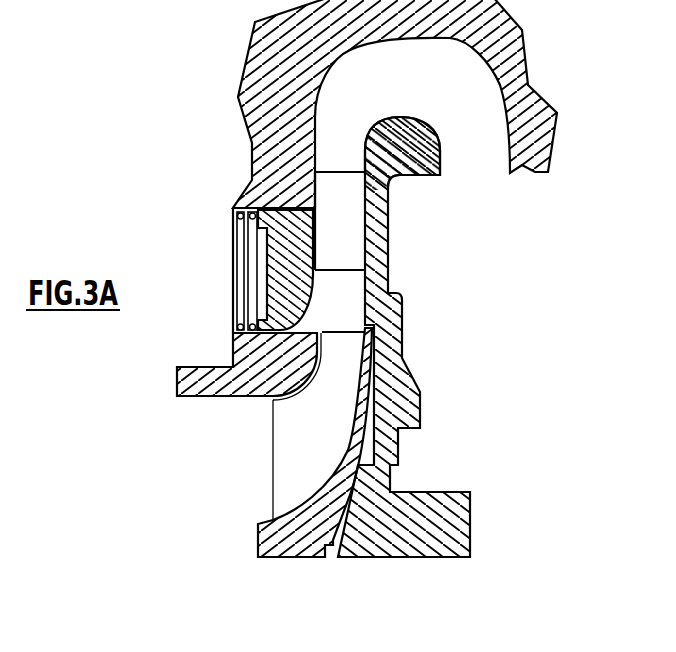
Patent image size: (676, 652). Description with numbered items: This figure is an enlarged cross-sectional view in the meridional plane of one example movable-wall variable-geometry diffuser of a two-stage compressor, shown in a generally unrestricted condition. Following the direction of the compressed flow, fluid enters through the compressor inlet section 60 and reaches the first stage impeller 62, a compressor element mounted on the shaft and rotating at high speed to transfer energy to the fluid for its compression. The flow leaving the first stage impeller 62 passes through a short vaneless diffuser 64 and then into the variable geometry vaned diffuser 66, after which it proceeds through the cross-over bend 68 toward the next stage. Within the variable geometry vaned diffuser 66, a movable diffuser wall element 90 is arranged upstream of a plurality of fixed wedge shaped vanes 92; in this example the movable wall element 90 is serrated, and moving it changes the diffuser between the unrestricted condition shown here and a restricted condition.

The compressor inlet section 60 is at (192, 396).
The first stage impeller 62 is at (343, 358).
The short vaneless diffuser 64 is at (348, 308).
The variable geometry vaned diffuser 66 is at (262, 247).
The cross-over bend 68 is at (421, 97).
The movable diffuser wall element 90 is at (350, 287).
The fixed wedge shaped vanes 92 is at (342, 193).